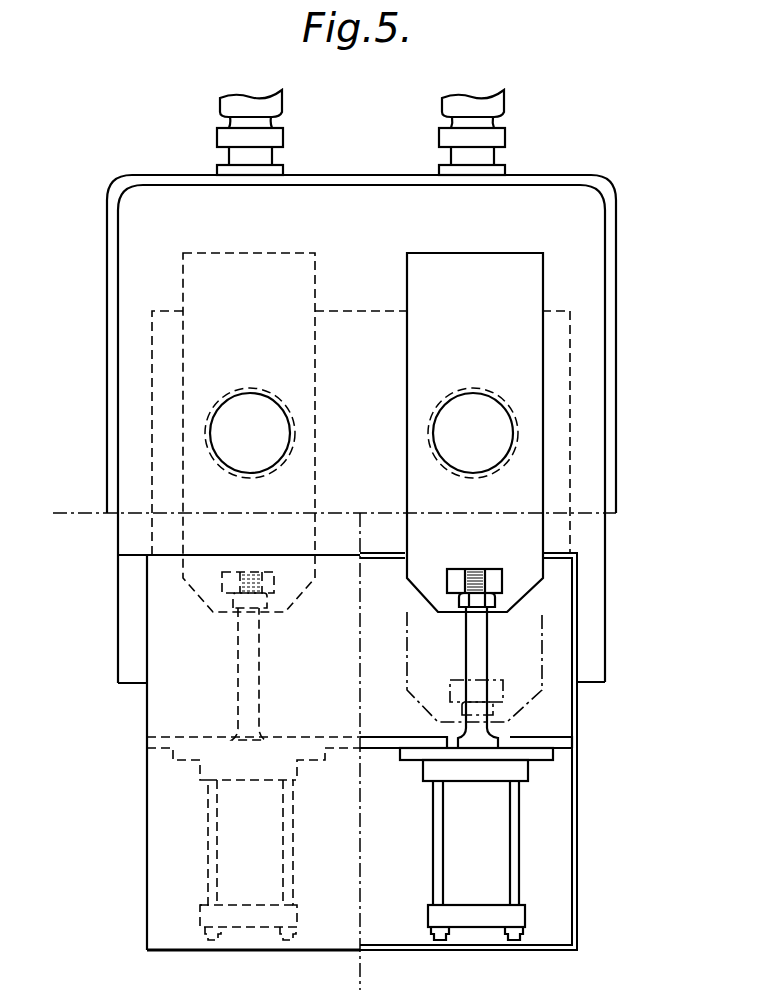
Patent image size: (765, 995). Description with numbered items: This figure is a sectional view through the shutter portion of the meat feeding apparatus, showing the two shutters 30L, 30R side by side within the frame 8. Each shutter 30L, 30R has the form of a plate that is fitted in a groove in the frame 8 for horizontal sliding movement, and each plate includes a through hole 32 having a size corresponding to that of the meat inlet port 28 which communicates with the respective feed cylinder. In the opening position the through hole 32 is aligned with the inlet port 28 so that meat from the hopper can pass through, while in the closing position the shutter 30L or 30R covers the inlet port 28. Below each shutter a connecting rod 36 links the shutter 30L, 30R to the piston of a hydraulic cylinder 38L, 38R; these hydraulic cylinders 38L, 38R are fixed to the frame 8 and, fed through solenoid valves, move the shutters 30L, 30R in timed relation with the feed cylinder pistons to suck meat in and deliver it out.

The shutter 30R is at (197, 272).
The shutter 30L is at (525, 277).
The meat inlet port 28 is at (497, 422).
The through hole 32 is at (518, 440).
The connecting rod 36 is at (478, 640).
The frame 8 is at (577, 718).
The hydraulic cylinder 38R is at (208, 845).
The hydraulic cylinder 38L is at (515, 843).